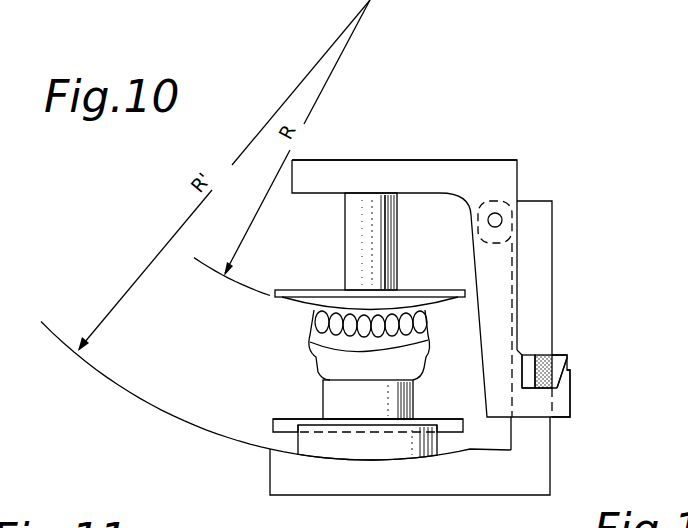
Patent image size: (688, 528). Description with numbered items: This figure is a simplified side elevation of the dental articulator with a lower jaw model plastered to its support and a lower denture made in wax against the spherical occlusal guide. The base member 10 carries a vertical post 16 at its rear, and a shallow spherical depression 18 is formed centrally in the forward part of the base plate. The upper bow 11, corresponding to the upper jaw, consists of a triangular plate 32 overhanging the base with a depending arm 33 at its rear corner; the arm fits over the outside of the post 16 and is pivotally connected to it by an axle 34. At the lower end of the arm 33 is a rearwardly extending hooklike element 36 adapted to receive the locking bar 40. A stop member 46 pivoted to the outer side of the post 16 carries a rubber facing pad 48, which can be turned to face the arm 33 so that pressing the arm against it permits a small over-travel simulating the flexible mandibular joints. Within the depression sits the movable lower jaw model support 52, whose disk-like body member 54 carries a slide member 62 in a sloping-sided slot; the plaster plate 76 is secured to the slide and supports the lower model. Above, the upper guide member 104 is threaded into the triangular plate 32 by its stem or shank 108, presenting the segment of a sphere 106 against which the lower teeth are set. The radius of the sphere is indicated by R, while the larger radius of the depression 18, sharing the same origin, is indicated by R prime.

The base member 10 is at (266, 492).
The upper bow 11 is at (335, 156).
The vertical post 16 is at (546, 276).
The spherical depression 18 is at (245, 455).
The triangular plate 32 is at (420, 160).
The depending arm 33 is at (481, 337).
The axle 34 is at (499, 216).
The hooklike element 36 is at (563, 403).
The locking bar 40 is at (557, 366).
The stop member 46 is at (537, 352).
The rubber facing pad 48 is at (551, 353).
The movable lower jaw model support 52 is at (264, 423).
The disk-like body member 54 is at (380, 452).
The slide member 62 is at (447, 421).
The plaster plate 76 is at (327, 395).
The upper guide member 104 is at (338, 234).
The segment of a sphere 106 is at (313, 294).
The stem or shank 108 is at (386, 252).